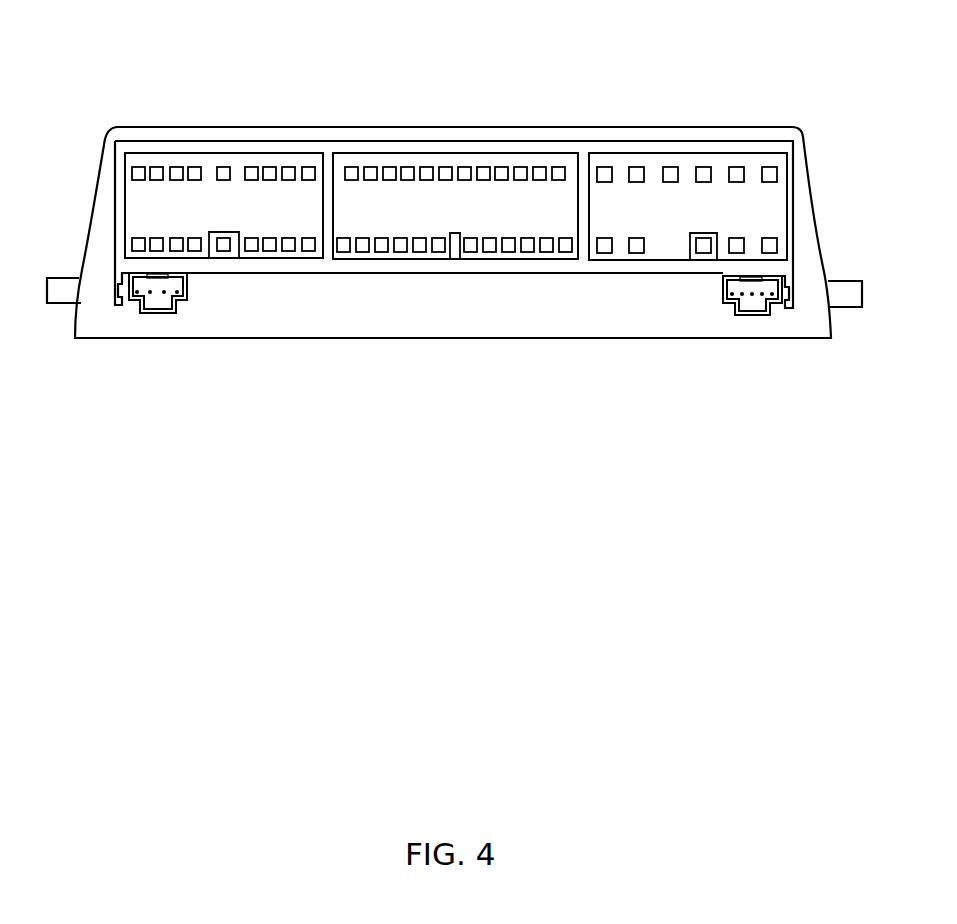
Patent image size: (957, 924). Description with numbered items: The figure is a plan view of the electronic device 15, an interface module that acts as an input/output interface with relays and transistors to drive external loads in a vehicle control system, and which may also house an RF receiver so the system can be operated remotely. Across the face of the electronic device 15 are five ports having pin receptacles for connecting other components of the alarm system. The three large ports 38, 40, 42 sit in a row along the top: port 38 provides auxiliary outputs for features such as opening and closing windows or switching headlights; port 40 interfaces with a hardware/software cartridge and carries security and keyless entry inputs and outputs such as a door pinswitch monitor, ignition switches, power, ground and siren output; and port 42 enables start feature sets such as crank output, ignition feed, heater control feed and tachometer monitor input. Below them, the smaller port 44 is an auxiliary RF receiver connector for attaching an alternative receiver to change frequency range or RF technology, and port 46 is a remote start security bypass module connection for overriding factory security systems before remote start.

The electronic device 15 is at (147, 128).
The port 38 is at (208, 162).
The port 40 is at (425, 162).
The port 42 is at (653, 162).
The port 44 is at (157, 302).
The port 46 is at (752, 307).